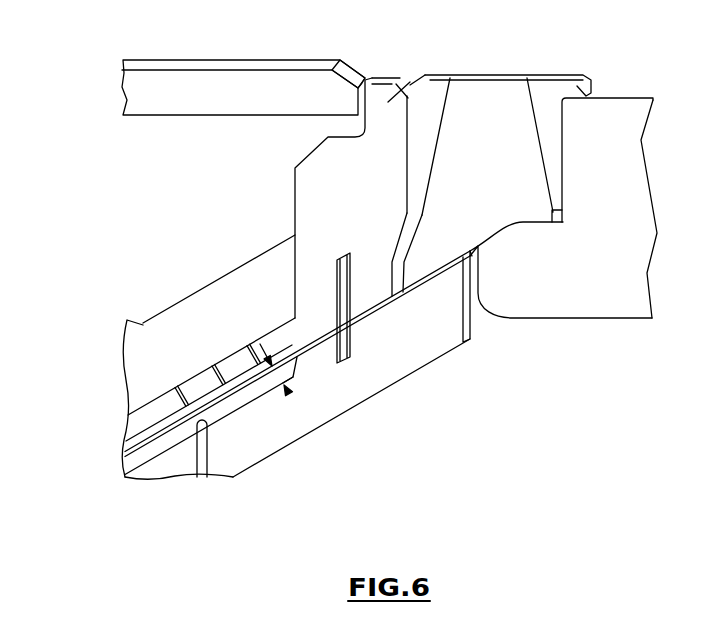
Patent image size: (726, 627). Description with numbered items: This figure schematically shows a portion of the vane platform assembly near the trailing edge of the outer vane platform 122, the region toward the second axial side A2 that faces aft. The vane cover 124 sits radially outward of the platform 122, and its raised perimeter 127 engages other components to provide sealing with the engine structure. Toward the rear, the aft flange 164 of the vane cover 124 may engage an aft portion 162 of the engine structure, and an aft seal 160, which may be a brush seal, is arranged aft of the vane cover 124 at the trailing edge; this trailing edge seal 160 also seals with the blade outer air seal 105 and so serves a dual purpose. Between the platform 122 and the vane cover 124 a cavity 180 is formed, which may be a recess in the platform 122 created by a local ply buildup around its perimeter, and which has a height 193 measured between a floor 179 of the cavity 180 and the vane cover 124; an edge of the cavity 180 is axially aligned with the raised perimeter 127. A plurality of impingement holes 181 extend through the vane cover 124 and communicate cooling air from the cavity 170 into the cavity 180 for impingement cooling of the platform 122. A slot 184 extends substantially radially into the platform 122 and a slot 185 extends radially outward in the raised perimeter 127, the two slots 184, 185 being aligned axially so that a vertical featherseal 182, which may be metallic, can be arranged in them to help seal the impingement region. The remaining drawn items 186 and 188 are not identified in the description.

The aft portion 162 is at (327, 88).
The board edge chamfer 186 is at (357, 83).
The aft flange 164 is at (387, 107).
The aft seal 160 is at (543, 93).
The cavity 170 is at (198, 197).
The raised perimeter 127 is at (323, 197).
The bracket arm 188 is at (187, 307).
The slot 185 is at (350, 293).
The second axial side A2 is at (470, 332).
The blade outer air seal 105 is at (567, 282).
The impingement holes 181 is at (167, 405).
The vertical featherseal 182 is at (350, 333).
The vane cover 124 is at (137, 432).
The slot 184 is at (347, 354).
The height 193 is at (289, 393).
The cavity 180 is at (148, 452).
The floor 179 is at (207, 470).
The outer vane platform 122 is at (283, 420).